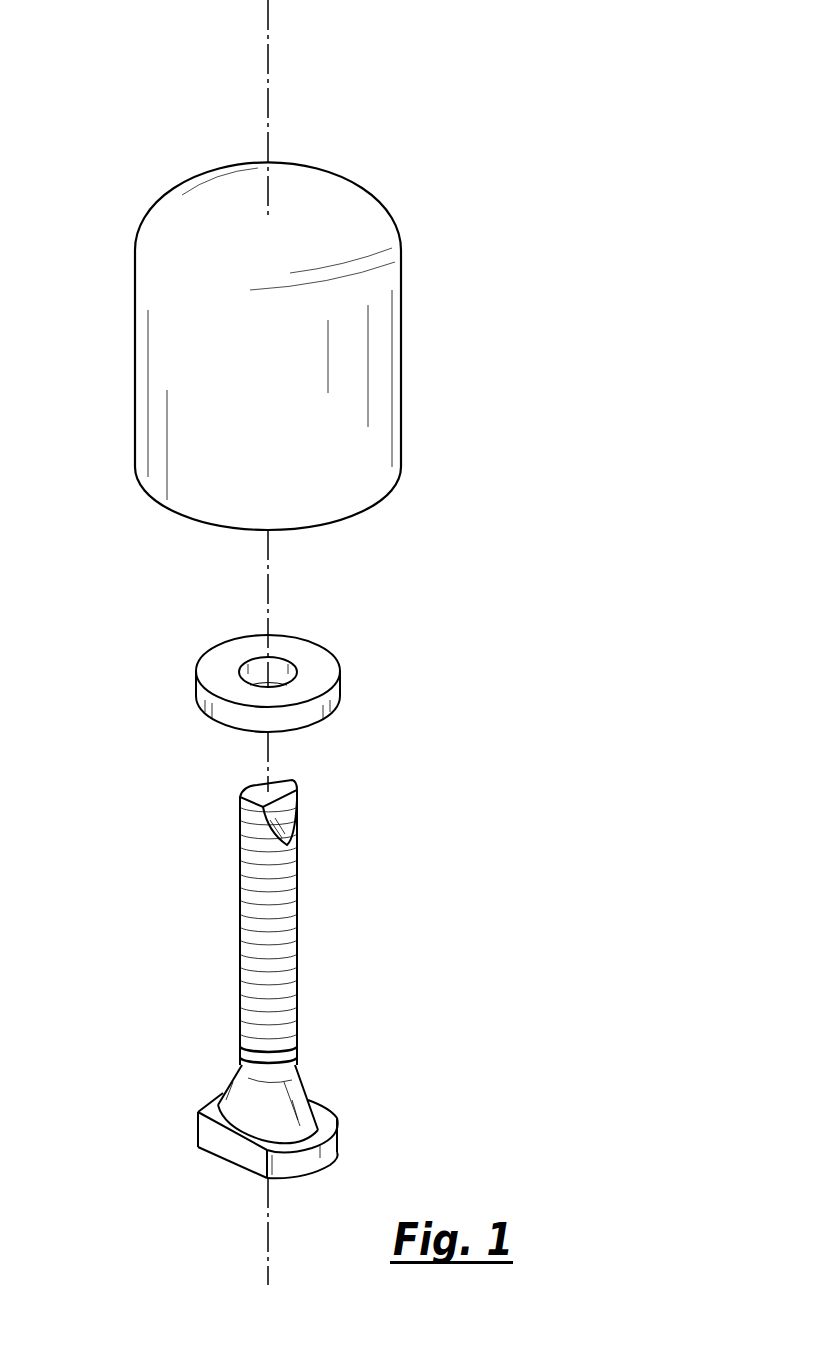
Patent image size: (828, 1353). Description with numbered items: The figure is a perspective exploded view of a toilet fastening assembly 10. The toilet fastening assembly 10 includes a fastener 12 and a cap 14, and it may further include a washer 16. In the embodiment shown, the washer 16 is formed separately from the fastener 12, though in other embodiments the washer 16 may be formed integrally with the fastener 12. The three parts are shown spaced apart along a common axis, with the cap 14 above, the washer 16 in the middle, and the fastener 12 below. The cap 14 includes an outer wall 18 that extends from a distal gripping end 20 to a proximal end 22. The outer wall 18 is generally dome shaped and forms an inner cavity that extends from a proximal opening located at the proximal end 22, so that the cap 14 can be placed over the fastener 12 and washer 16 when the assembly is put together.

The toilet fastening assembly 10 is at (580, 437).
The fastener 12 is at (290, 961).
The cap 14 is at (268, 431).
The washer 16 is at (218, 678).
The outer wall 18 is at (140, 380).
The distal gripping end 20 is at (317, 195).
The proximal end 22 is at (350, 518).